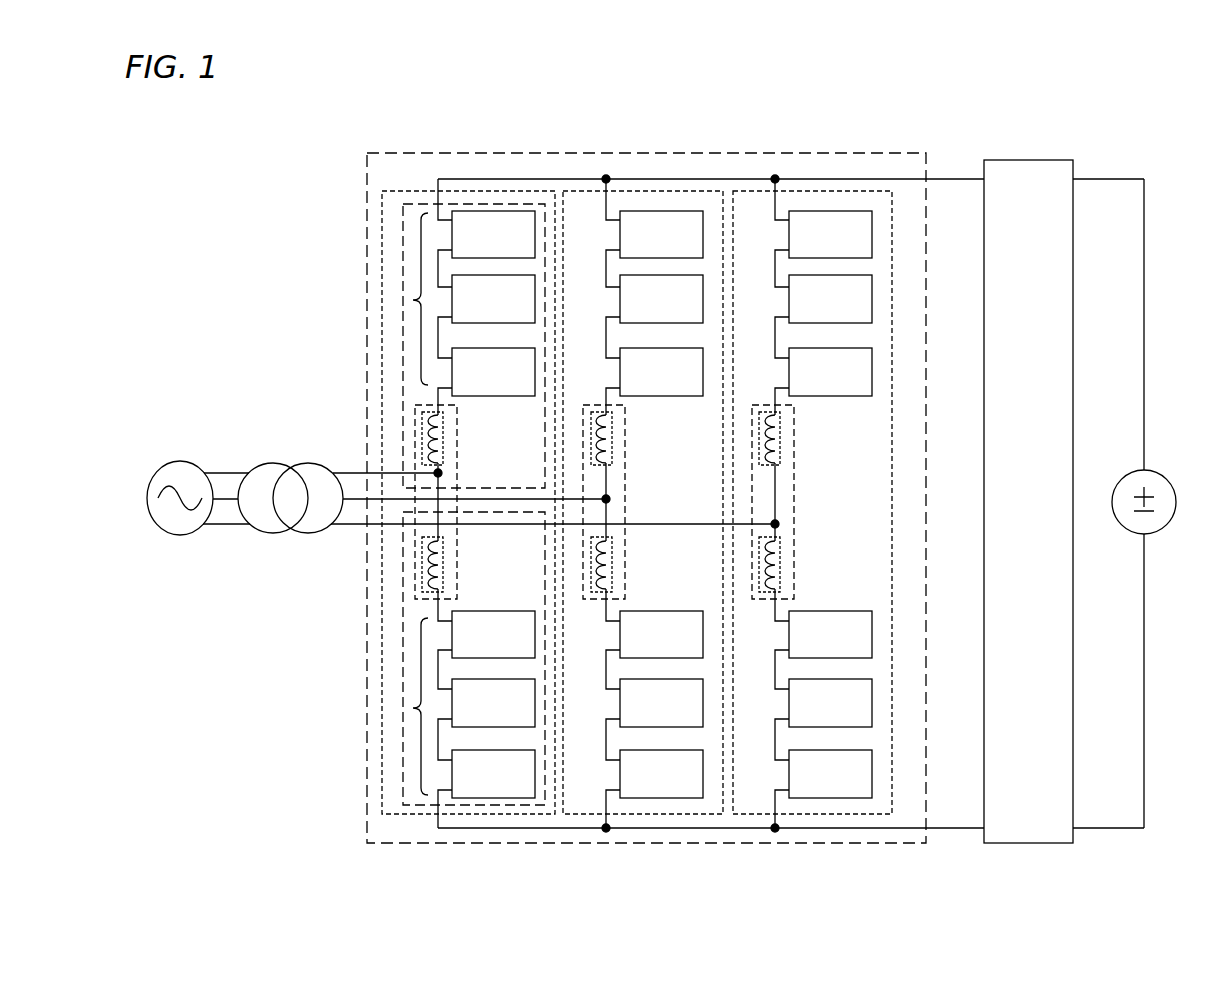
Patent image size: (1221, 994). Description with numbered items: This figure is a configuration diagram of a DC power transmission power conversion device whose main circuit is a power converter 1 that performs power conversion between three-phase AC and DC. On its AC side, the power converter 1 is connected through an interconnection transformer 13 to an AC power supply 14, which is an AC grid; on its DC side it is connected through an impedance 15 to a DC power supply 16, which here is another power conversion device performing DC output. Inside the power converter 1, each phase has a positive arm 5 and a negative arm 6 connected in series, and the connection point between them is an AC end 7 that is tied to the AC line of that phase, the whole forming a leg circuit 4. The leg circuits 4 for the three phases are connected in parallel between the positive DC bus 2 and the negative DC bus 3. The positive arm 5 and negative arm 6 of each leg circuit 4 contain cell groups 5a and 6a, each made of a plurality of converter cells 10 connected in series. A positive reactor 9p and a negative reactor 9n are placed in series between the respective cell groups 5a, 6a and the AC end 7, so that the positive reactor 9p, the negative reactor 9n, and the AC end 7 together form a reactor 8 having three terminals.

The power converter 1 is at (578, 153).
The positive DC bus 2 is at (942, 178).
The negative DC bus 3 is at (942, 828).
The leg circuit 4 is at (407, 815).
The positive arm 5 is at (403, 237).
The cell group 5a is at (418, 300).
The negative arm 6 is at (405, 640).
The cell group 6a is at (418, 708).
The AC end 7 is at (436, 473).
The reactor 8 is at (456, 478).
The positive reactor 9p is at (443, 447).
The negative reactor 9n is at (443, 570).
The converter cell 10 is at (472, 211).
The interconnection transformer 13 is at (277, 463).
The AC power supply 14 is at (178, 461).
The impedance 15 is at (1032, 160).
The DC power supply 16 is at (1157, 472).